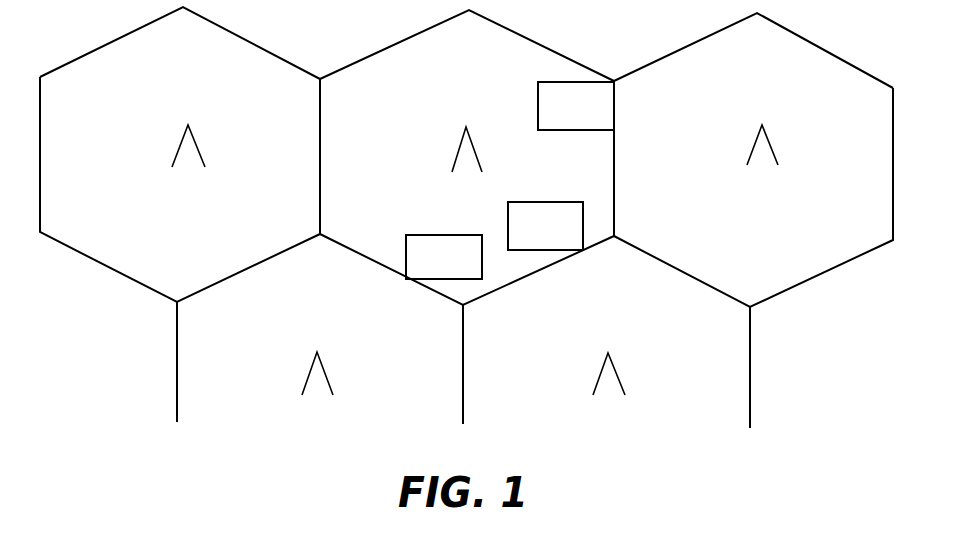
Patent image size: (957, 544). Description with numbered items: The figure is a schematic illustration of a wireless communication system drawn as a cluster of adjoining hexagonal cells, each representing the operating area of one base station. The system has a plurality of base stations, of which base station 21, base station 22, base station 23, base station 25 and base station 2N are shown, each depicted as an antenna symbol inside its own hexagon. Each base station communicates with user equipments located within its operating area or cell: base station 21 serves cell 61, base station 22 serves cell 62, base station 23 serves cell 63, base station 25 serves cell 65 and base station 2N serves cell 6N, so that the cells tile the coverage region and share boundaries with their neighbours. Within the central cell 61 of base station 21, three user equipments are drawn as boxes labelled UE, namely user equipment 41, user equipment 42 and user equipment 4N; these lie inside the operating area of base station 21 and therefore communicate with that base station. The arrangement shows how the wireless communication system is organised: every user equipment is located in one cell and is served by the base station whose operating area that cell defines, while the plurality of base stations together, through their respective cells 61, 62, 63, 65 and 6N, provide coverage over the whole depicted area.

The cell 63 is at (180, 43).
The cell 61 is at (467, 51).
The cell 62 is at (753, 50).
The cell 6N is at (198, 362).
The cell 65 is at (487, 364).
The base station 23 is at (212, 150).
The base station 21 is at (489, 153).
The base station 22 is at (785, 148).
The base station 2N is at (340, 375).
The base station 25 is at (631, 377).
The user equipment 42 is at (545, 101).
The user equipment 4N is at (417, 239).
The user equipment 41 is at (514, 220).